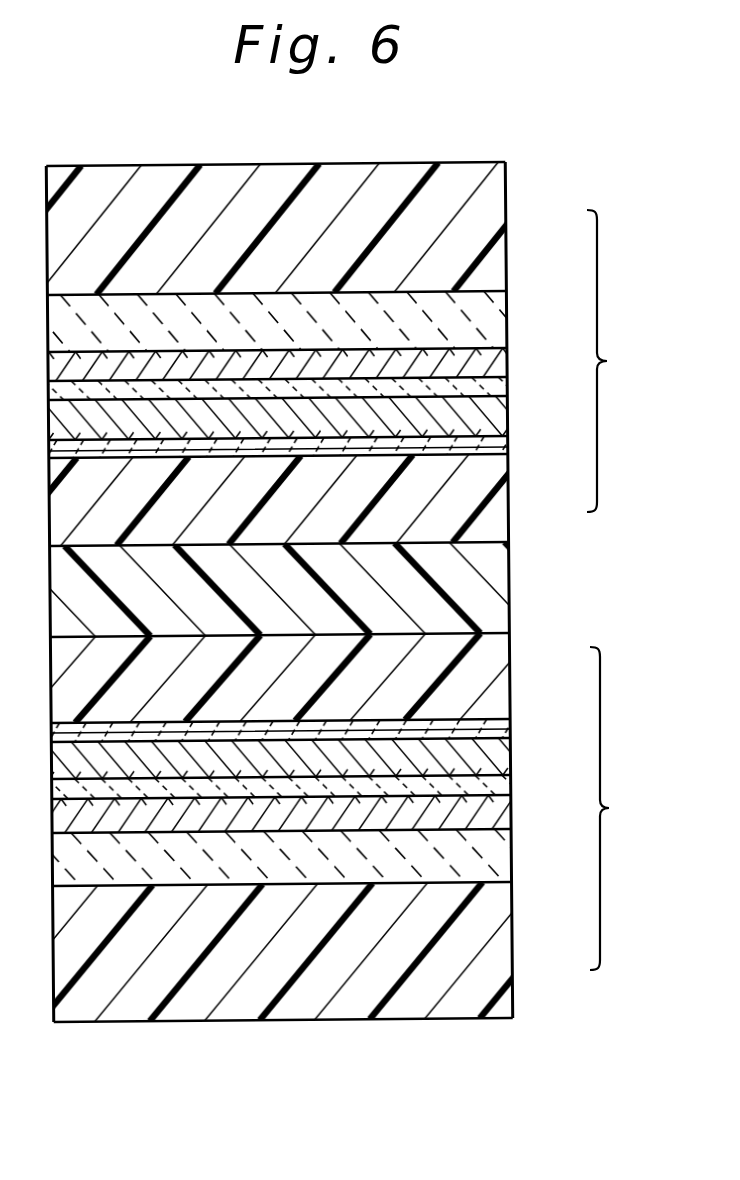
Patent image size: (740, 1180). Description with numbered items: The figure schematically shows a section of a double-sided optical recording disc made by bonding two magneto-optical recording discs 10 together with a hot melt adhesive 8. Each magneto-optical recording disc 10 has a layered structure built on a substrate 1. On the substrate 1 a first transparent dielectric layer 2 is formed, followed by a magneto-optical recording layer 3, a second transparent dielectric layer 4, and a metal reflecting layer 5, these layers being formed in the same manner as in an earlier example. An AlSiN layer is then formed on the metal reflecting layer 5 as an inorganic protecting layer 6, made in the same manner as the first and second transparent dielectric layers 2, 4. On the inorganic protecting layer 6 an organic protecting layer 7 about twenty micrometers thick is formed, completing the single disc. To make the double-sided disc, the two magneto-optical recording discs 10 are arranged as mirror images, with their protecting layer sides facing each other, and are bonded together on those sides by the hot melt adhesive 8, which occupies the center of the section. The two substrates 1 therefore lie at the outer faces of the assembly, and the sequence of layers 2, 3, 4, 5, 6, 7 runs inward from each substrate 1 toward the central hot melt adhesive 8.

The substrate 1 is at (510, 230).
The first transparent dielectric layer 2 is at (510, 316).
The magneto-optical recording layer 3 is at (510, 357).
The second transparent dielectric layer 4 is at (510, 388).
The metal reflecting layer 5 is at (510, 422).
The inorganic protecting layer 6 is at (510, 450).
The organic protecting layer 7 is at (510, 497).
The hot melt adhesive 8 is at (510, 585).
The magneto-optical recording disc 10 is at (620, 590).